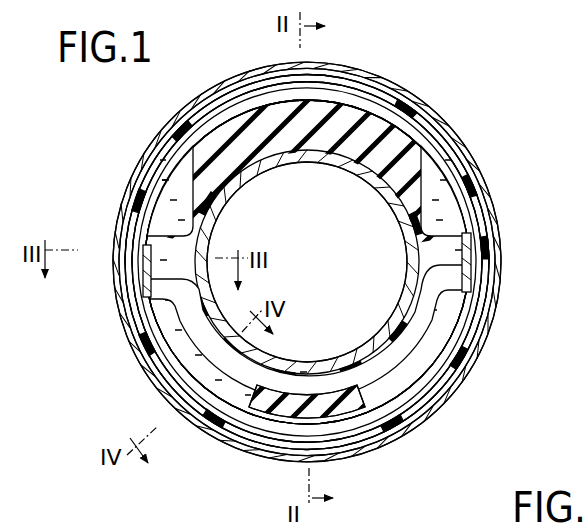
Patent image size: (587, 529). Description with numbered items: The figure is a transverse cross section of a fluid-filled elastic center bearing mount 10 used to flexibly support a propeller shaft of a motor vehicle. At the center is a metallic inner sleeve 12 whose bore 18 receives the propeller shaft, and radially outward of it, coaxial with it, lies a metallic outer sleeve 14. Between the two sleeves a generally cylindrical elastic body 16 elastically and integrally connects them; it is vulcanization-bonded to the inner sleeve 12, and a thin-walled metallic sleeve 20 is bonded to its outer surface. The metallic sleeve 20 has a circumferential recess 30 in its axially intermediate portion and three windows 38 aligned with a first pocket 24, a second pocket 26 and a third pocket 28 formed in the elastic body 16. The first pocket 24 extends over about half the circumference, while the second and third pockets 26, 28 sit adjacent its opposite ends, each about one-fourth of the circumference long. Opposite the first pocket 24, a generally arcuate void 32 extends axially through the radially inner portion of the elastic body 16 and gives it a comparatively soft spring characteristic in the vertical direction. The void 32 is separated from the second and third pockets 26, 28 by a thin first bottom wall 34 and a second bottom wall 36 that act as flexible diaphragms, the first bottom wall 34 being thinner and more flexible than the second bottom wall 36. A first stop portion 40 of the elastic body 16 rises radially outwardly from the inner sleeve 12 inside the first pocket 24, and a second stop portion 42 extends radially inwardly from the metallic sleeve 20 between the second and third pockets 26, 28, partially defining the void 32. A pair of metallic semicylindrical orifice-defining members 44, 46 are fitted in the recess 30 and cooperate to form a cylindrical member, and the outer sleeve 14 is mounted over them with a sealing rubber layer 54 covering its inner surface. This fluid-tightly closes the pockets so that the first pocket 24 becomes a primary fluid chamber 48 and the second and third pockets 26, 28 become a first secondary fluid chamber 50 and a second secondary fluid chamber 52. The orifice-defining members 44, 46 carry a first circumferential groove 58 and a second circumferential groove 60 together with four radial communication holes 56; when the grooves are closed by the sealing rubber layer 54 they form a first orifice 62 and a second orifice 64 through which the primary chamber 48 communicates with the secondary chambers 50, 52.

The fluid-filled elastic center bearing mount 10 is at (503, 79).
The inner sleeve 12 is at (290, 163).
The outer sleeve 14 is at (466, 148).
The elastic body 16 is at (405, 248).
The bore 18 is at (388, 330).
The metallic sleeve 20 is at (267, 447).
The first pocket 24 is at (457, 213).
The second pocket 26 is at (445, 326).
The third pocket 28 is at (216, 411).
The circumferential recess 30 is at (336, 441).
The arcuate void 32 is at (311, 393).
The first bottom wall 34 is at (395, 376).
The second bottom wall 36 is at (187, 348).
The windows 38 is at (468, 228).
The first stop portion 40 is at (318, 110).
The second stop portion 42 is at (295, 402).
The first orifice-defining member 44 is at (152, 170).
The second orifice-defining member 46 is at (221, 420).
The primary fluid chamber 48 is at (248, 105).
The first secondary fluid chamber 50 is at (447, 340).
The second secondary fluid chamber 52 is at (190, 376).
The sealing rubber layer 54 is at (390, 90).
The communication holes 56 is at (162, 146).
The first circumferential groove 58 is at (395, 98).
The second circumferential groove 60 is at (146, 285).
The first orifice 62 is at (268, 72).
The second orifice 64 is at (127, 250).